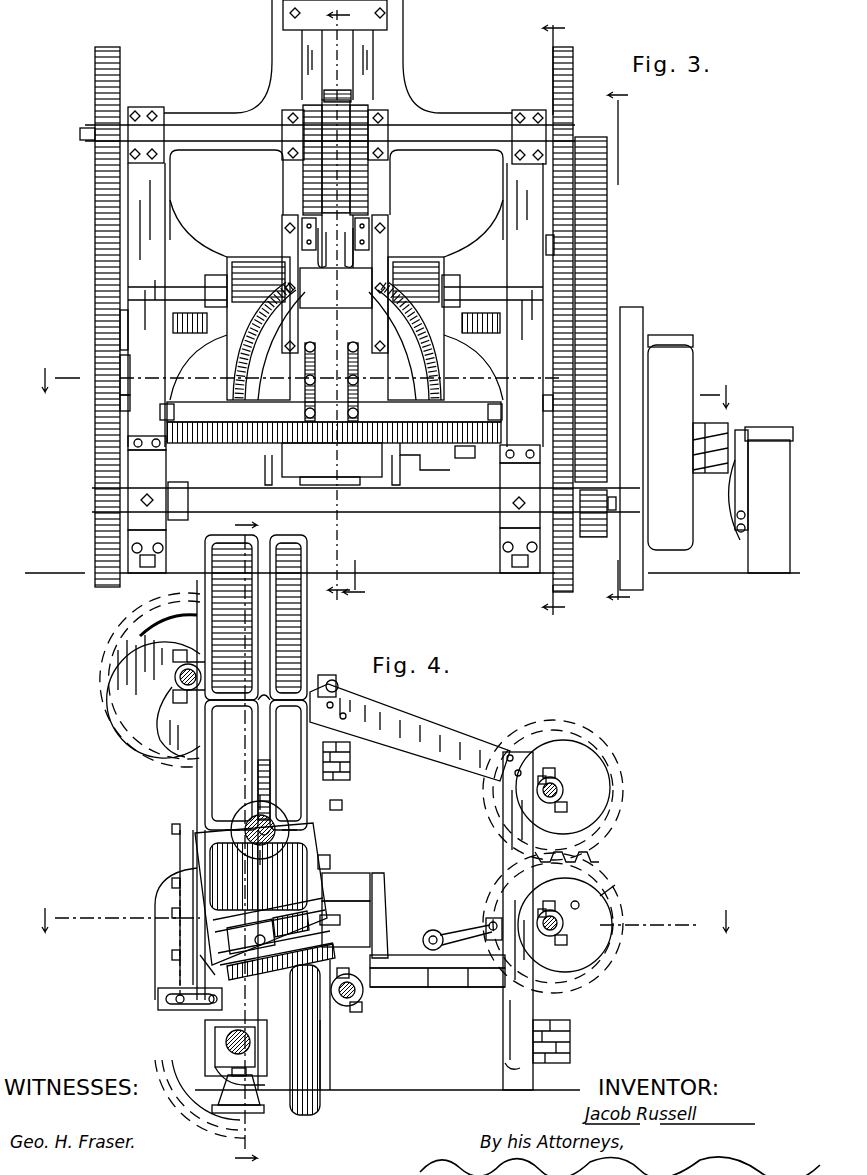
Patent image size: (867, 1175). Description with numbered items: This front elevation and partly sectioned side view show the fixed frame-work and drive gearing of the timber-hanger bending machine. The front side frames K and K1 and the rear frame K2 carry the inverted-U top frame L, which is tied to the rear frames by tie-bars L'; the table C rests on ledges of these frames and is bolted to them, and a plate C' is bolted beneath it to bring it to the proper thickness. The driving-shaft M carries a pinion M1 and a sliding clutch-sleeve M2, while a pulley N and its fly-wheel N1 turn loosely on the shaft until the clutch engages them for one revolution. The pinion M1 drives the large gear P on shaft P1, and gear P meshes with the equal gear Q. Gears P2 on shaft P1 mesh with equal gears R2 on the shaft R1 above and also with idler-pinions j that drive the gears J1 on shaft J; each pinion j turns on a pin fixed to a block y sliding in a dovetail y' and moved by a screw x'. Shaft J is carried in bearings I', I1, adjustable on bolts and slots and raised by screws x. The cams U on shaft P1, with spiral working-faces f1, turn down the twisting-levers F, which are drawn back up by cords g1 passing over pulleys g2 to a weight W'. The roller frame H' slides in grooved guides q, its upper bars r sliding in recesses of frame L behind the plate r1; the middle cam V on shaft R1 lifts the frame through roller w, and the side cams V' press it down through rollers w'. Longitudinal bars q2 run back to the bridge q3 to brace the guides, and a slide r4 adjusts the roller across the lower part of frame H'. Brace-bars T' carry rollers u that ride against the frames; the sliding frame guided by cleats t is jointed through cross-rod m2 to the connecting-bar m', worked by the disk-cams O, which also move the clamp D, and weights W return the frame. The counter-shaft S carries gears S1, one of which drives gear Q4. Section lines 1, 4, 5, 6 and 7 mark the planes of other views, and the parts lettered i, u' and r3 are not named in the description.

In FIG. 3, the gear R2 is at (345, 319).
In FIG. 4, the gear R2 is at (150, 679).
In FIG. 3, the shaft R1 is at (327, 135).
In FIG. 4, the shaft R1 is at (201, 674).
In FIG. 3, the top frame L is at (335, 200).
In FIG. 4, the top frame L is at (239, 767).
In FIG. 3, the vertical sliding bar r is at (337, 65).
In FIG. 3, the roller w is at (337, 92).
In FIG. 3, the plate r1 is at (354, 305).
In FIG. 3, the section line 6 is at (340, 305).
In FIG. 4, the section line 6 is at (354, 587).
In FIG. 3, the section line 4 is at (554, 318).
In FIG. 3, the section line 1 is at (619, 339).
In FIG. 3, the large gear P is at (608, 170).
In FIG. 3, the gear Q is at (594, 537).
In FIG. 3, the middle cam V is at (336, 156).
In FIG. 4, the middle cam V is at (153, 696).
In FIG. 3, the side cam V' is at (339, 160).
In FIG. 4, the side cam V' is at (171, 722).
In FIG. 3, the roller w' is at (334, 242).
In FIG. 3, the vertical frame H' is at (336, 261).
In FIG. 4, the vertical frame H' is at (166, 934).
In FIG. 3, the guide q is at (335, 284).
In FIG. 3, the twisting-lever F is at (329, 381).
In FIG. 4, the twisting-lever F is at (437, 959).
In FIG. 3, the cam U is at (335, 328).
In FIG. 3, the spiral working-face f1 is at (262, 325).
In FIG. 3, the shaft P1 is at (452, 275).
In FIG. 4, the shaft P1 is at (262, 831).
In FIG. 3, the gear P2 is at (553, 243).
In FIG. 4, the gear P2 is at (342, 818).
In FIG. 3, the front side frame K is at (525, 305).
In FIG. 4, the front side frame K is at (262, 969).
In FIG. 3, the front side frame K1 is at (146, 305).
In FIG. 3, the section line 7 is at (384, 388).
In FIG. 4, the section line 7 is at (384, 920).
In FIG. 3, the brace-bar T' is at (334, 412).
In FIG. 3, the table C is at (334, 432).
In FIG. 4, the table C is at (437, 977).
In FIG. 3, the roller u is at (333, 403).
In FIG. 3, the idler-pinion j is at (96, 400).
In FIG. 3, the block y is at (130, 381).
In FIG. 4, the block y is at (281, 945).
In FIG. 3, the plate C' is at (437, 460).
In FIG. 3, the bearing block i is at (332, 470).
In FIG. 3, the shaft J is at (366, 509).
In FIG. 4, the shaft J is at (248, 1040).
In FIG. 3, the bearing I' is at (147, 504).
In FIG. 3, the gear J1 is at (95, 530).
In FIG. 4, the gear J1 is at (211, 1079).
In FIG. 3, the section line 5 is at (244, 843).
In FIG. 3, the pinion M1 is at (612, 462).
In FIG. 3, the fly-wheel N1 is at (670, 331).
In FIG. 3, the pulley N is at (670, 447).
In FIG. 3, the clutch-sleeve M2 is at (710, 440).
In FIG. 3, the driving-shaft M is at (724, 499).
In FIG. 4, the driving-shaft M is at (364, 993).
In FIG. 4, the pulley g2 is at (335, 680).
In FIG. 4, the tie-bar L' is at (410, 732).
In FIG. 4, the weight W' is at (347, 761).
In FIG. 4, the rear side frame K2 is at (518, 921).
In FIG. 4, the gear S1 is at (553, 791).
In FIG. 4, the counter-shaft S is at (538, 795).
In FIG. 4, the cord g1 is at (333, 859).
In FIG. 4, the dovetail y' is at (273, 929).
In FIG. 4, the longitudinal bar q2 is at (346, 910).
In FIG. 4, the screw x' is at (333, 912).
In FIG. 4, the cross-frame or bridge q3 is at (386, 920).
In FIG. 4, the cross-rod m2 is at (423, 939).
In FIG. 4, the connecting-bar m' is at (466, 929).
In FIG. 4, the pivot bracket u' is at (504, 936).
In FIG. 4, the cleat or guide t is at (424, 977).
In FIG. 4, the plunger or clamp D is at (478, 977).
In FIG. 4, the disk-cam O is at (572, 940).
In FIG. 4, the gear Q4 is at (615, 887).
In FIG. 4, the link r3 is at (207, 967).
In FIG. 4, the slide r4 is at (190, 999).
In FIG. 4, the bearing I1 is at (230, 1072).
In FIG. 4, the screw x is at (235, 1090).
In FIG. 4, the weight W is at (548, 1044).